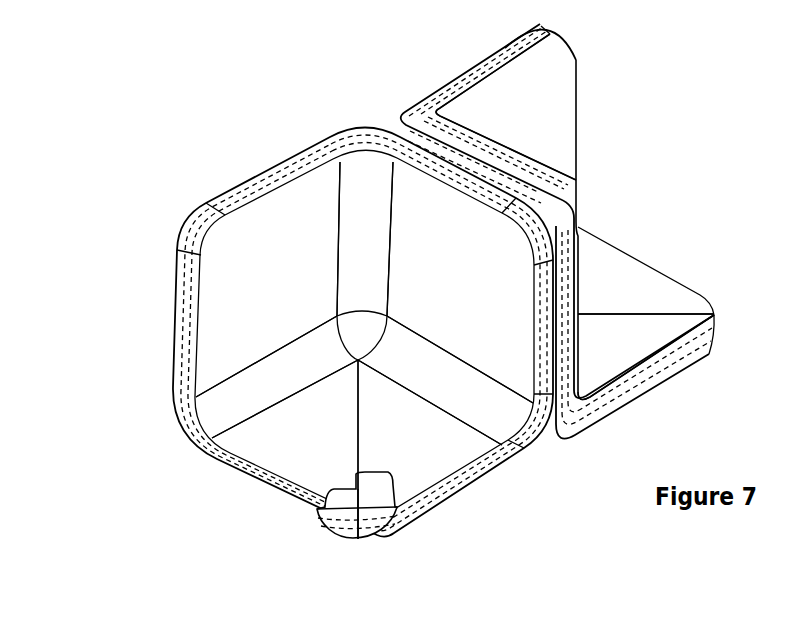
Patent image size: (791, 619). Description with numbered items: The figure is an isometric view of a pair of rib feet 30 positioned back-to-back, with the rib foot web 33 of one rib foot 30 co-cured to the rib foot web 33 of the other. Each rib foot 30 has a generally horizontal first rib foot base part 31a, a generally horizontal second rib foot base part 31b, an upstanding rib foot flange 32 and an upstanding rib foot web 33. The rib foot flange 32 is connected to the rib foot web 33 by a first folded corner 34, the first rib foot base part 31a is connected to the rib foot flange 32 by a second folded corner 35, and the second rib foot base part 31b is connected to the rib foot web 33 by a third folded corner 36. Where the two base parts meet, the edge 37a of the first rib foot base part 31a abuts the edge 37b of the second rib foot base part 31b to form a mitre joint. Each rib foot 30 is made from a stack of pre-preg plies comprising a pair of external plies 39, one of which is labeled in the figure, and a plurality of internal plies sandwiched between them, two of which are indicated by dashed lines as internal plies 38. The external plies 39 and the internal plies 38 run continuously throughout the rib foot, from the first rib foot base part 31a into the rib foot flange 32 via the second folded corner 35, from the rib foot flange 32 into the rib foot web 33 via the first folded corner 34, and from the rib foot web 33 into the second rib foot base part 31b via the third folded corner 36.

The rib foot 30 is at (135, 328).
The first rib foot base part 31a is at (293, 453).
The second rib foot base part 31b is at (591, 363).
The rib foot flange 32 is at (268, 281).
The rib foot web 33 is at (449, 296).
The first folded corner 34 is at (348, 260).
The second folded corner 35 is at (267, 388).
The third folded corner 36 is at (438, 406).
The edge of the first rib foot base part 37a is at (402, 518).
The edge of the second rib foot base part 37b is at (318, 517).
The internal plies 38 is at (438, 106).
The external plies 39 is at (468, 199).